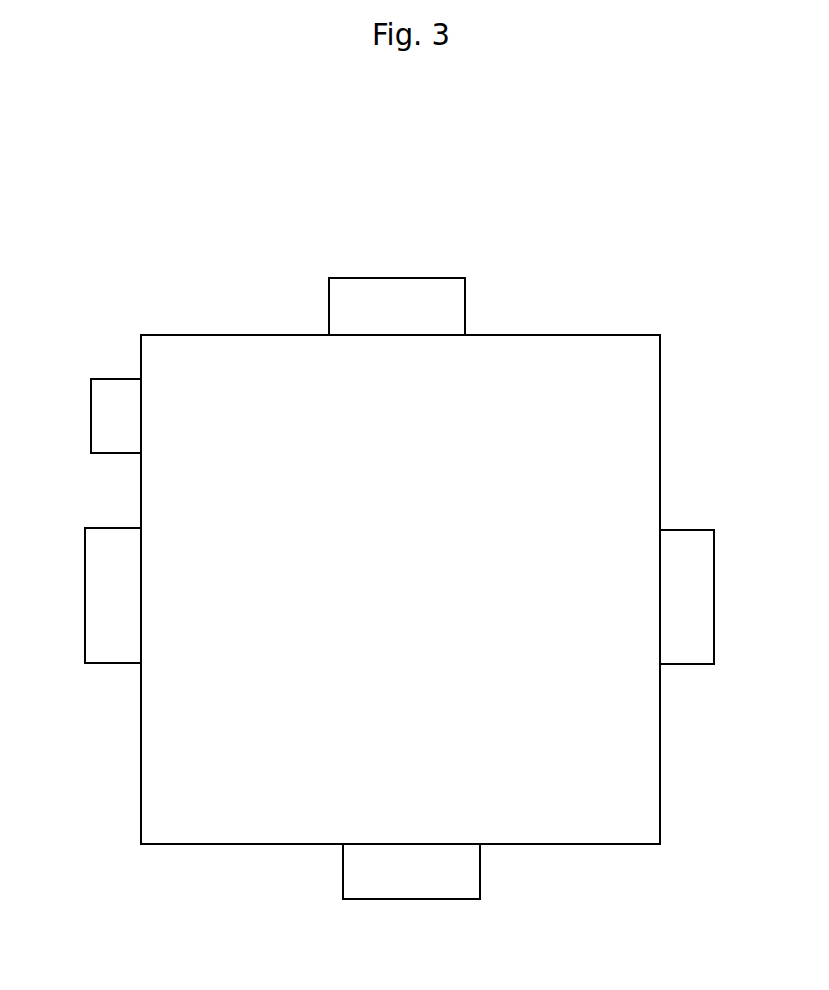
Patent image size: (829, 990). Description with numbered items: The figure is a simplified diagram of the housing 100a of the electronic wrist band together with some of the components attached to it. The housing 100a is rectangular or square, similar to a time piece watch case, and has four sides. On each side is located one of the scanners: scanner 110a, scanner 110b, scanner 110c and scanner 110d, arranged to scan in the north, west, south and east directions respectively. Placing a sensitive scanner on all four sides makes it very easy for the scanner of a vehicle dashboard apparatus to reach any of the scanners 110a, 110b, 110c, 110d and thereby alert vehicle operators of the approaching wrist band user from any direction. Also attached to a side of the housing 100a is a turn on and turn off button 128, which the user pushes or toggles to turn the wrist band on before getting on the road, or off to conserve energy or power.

The housing 100a is at (252, 388).
The scanner 110a is at (415, 297).
The scanner 110b is at (100, 556).
The scanner 110c is at (432, 873).
The scanner 110d is at (680, 570).
The turn on and turn off button 128 is at (112, 416).